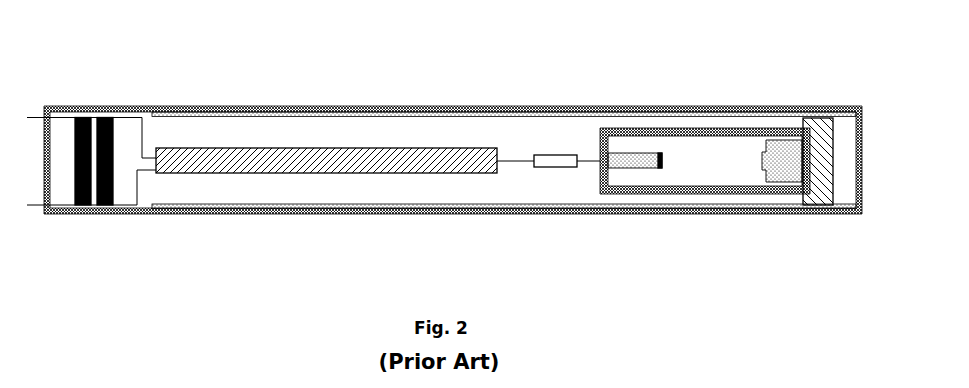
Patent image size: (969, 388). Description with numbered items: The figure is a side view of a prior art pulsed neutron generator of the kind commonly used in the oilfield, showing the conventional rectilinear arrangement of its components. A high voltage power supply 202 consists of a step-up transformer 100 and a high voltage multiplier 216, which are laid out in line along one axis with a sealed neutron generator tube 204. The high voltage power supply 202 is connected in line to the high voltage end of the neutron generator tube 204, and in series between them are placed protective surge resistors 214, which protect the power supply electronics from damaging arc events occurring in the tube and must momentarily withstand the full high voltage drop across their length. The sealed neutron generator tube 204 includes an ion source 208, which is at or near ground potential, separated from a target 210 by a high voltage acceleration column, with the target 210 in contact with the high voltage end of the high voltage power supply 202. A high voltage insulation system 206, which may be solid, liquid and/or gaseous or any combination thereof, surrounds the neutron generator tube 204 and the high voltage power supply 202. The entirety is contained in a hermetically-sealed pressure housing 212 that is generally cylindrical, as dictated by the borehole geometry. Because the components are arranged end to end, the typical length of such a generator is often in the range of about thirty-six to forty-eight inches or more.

The step-up transformer 100 is at (111, 117).
The high voltage power supply 202 is at (118, 180).
The sealed neutron generator tube 204 is at (705, 163).
The high voltage insulation system 206 is at (568, 113).
The ion source 208 is at (783, 148).
The target 210 is at (660, 153).
The pressure housing 212 is at (413, 107).
The surge resistors 214 is at (550, 167).
The high voltage multiplier 216 is at (253, 148).